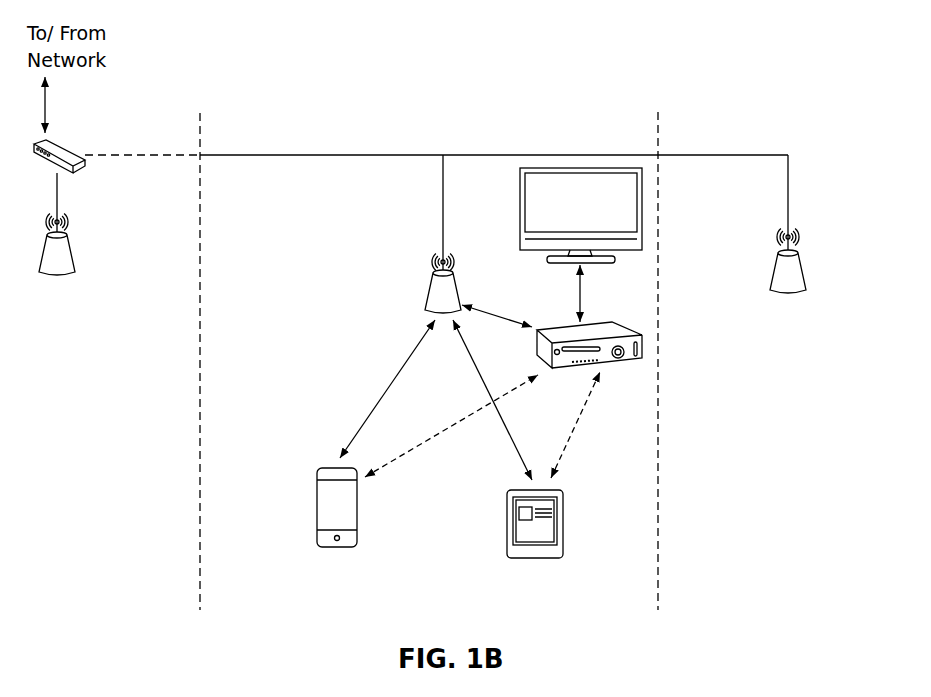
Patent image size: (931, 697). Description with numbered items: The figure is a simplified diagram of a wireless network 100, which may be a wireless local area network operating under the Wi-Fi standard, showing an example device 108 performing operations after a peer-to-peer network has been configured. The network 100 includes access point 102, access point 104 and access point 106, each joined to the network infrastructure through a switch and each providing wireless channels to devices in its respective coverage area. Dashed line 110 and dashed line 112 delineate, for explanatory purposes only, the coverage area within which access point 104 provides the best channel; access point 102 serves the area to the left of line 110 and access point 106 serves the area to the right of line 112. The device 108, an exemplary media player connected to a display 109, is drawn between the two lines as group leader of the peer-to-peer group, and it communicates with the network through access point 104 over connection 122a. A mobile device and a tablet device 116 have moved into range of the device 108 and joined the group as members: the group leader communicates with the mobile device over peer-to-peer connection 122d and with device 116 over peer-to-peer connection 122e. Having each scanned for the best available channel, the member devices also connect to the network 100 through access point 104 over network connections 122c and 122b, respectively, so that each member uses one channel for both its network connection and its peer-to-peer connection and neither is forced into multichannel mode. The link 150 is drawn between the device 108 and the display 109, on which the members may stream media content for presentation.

The wireless network 100 is at (556, 85).
The access point 102 is at (75, 262).
The access point 104 is at (428, 302).
The access point 106 is at (803, 263).
The device 108 is at (551, 372).
The display 109 is at (520, 212).
The dashed line 110 is at (200, 443).
The dashed line 112 is at (658, 433).
The device 116 is at (531, 560).
The connection 122a is at (498, 302).
The network connection 122b is at (484, 386).
The network connection 122c is at (395, 374).
The peer-to-peer connection 122d is at (433, 440).
The peer-to-peer connection 122e is at (572, 437).
The connection between console and display 150 is at (582, 290).